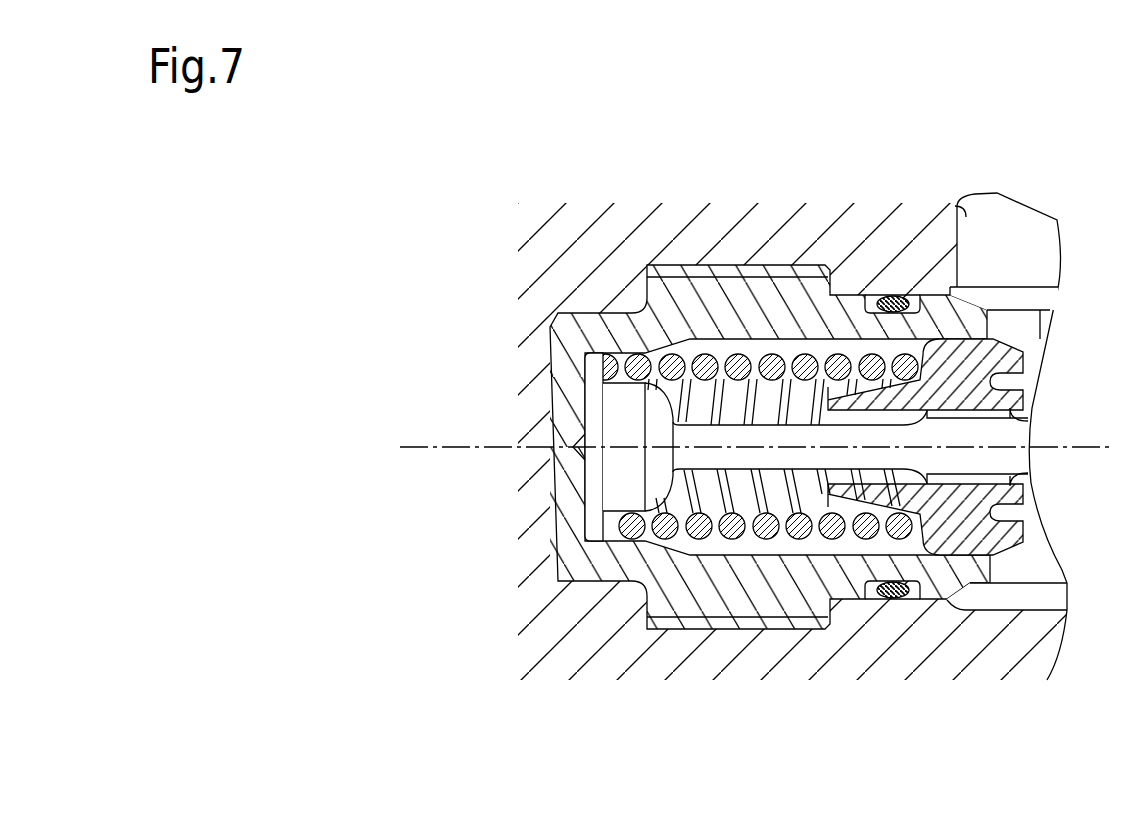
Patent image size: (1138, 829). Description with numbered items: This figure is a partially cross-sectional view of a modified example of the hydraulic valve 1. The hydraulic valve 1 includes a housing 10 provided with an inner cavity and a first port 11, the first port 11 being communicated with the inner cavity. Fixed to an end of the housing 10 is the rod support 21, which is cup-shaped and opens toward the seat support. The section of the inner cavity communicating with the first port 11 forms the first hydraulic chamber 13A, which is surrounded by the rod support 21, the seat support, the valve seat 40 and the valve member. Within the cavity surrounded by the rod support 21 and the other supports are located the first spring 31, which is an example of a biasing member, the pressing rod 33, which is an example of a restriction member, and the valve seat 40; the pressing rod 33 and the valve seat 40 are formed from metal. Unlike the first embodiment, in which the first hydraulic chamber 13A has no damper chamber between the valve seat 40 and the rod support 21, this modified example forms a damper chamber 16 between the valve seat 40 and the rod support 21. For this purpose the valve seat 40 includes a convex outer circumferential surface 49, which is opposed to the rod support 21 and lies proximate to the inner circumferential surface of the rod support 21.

The hydraulic valve 1 is at (754, 146).
The housing 10 is at (592, 236).
The first port 11 is at (966, 206).
The first hydraulic chamber 13A is at (1031, 295).
The damper chamber 16 is at (783, 549).
The rod support 21 is at (723, 258).
The first spring 31 is at (732, 548).
The pressing rod 33 is at (617, 400).
The valve seat 40 is at (1017, 422).
The convex outer circumferential surface 49 is at (993, 563).